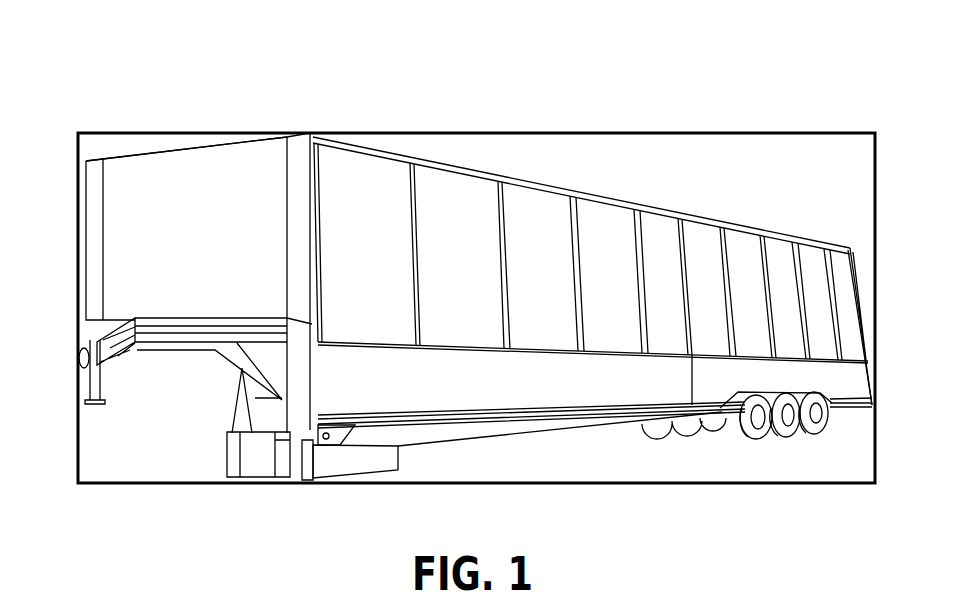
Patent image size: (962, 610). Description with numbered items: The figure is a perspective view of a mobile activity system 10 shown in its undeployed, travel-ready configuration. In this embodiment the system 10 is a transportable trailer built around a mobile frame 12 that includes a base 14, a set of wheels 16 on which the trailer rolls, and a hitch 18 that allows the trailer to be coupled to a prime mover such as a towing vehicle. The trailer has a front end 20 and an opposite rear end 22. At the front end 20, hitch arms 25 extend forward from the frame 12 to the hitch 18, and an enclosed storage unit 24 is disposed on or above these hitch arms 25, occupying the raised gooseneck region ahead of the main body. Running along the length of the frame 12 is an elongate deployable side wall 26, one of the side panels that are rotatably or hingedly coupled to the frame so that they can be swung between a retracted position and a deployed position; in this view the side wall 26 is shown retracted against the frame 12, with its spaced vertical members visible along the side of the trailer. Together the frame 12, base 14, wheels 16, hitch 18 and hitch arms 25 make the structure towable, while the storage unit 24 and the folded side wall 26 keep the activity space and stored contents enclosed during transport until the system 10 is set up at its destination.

The mobile activity system 10 is at (138, 87).
The mobile frame 12 is at (578, 165).
The base 14 is at (552, 450).
The wheels 16 is at (790, 450).
The hitch 18 is at (62, 343).
The front end 20 is at (62, 210).
The rear end 22 is at (867, 248).
The storage unit 24 is at (180, 120).
The hitch arms 25 is at (190, 362).
The side wall 26 is at (700, 243).